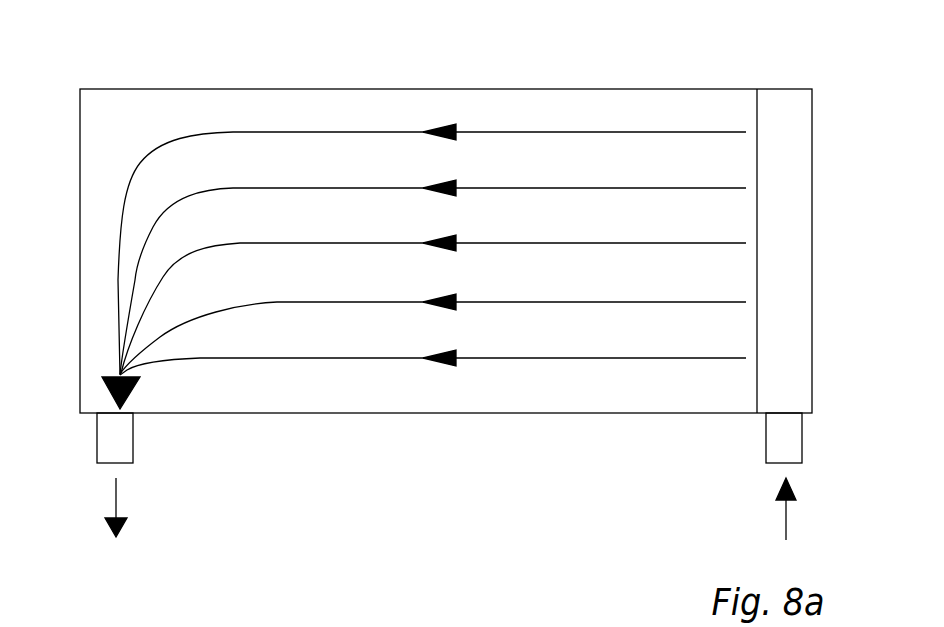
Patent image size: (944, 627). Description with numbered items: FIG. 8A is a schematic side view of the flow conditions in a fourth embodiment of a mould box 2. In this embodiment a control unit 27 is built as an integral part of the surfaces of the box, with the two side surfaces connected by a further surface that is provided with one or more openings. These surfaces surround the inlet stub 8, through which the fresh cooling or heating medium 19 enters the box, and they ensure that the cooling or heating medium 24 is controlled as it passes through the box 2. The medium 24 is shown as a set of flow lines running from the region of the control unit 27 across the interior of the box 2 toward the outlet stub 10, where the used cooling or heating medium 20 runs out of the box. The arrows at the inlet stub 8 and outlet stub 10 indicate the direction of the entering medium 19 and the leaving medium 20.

The mould box 2 is at (396, 440).
The inlet stub 8 is at (788, 438).
The outlet stub 10 is at (112, 436).
The fresh cooling or heating medium 19 is at (780, 522).
The used cooling or heating medium 20 is at (116, 492).
The cooling or heating medium 24 is at (530, 188).
The control unit 27 is at (787, 118).